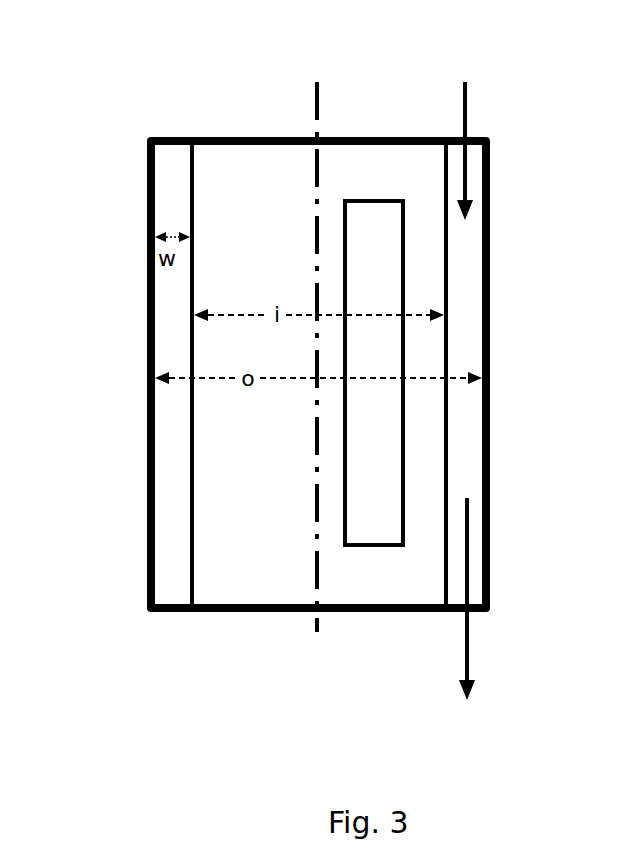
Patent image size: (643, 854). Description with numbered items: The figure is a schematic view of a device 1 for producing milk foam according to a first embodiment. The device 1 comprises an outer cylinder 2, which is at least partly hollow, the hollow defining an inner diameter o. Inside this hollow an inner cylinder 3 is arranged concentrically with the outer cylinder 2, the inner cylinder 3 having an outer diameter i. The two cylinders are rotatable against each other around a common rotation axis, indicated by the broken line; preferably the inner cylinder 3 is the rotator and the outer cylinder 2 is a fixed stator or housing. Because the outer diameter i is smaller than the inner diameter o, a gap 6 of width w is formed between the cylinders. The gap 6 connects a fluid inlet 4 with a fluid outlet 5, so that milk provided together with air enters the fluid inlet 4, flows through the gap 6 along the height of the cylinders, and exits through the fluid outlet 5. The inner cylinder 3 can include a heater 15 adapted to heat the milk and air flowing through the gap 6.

The device for producing milk foam 1 is at (163, 44).
The outer cylinder 2 is at (486, 408).
The inner cylinder 3 is at (446, 289).
The fluid inlet 4 is at (465, 130).
The fluid outlet 5 is at (467, 620).
The gap 6 is at (180, 532).
The heater 15 is at (374, 373).